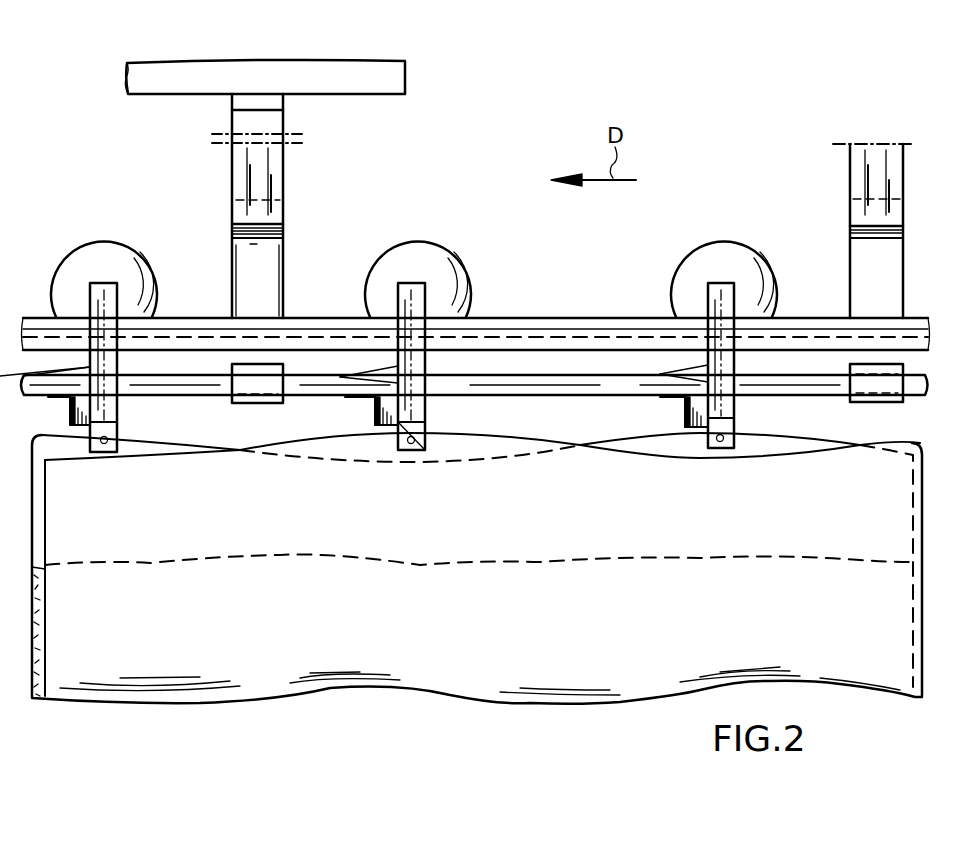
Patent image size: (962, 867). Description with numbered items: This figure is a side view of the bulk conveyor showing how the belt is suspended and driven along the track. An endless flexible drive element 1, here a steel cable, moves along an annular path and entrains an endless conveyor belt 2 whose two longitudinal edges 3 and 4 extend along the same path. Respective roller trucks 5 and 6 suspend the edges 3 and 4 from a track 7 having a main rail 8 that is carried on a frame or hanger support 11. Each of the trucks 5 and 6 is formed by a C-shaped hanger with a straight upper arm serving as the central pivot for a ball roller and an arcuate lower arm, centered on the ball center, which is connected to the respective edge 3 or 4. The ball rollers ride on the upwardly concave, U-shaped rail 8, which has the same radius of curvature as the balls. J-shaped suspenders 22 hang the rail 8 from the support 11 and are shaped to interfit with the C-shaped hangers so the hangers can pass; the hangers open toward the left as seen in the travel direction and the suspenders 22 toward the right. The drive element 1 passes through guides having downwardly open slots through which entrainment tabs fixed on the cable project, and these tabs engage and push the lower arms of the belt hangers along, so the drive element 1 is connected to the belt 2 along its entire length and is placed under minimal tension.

The endless flexible drive element 1 is at (578, 385).
The conveyor belt 2 is at (328, 672).
The longitudinal edge 3 is at (685, 458).
The longitudinal edge 4 is at (640, 437).
The roller truck 5 is at (437, 410).
The roller truck 6 is at (745, 410).
The track 7 is at (298, 220).
The main rail 8 is at (570, 305).
The frame or hanger support 11 is at (396, 80).
The J-shaped suspender 22 is at (268, 160).